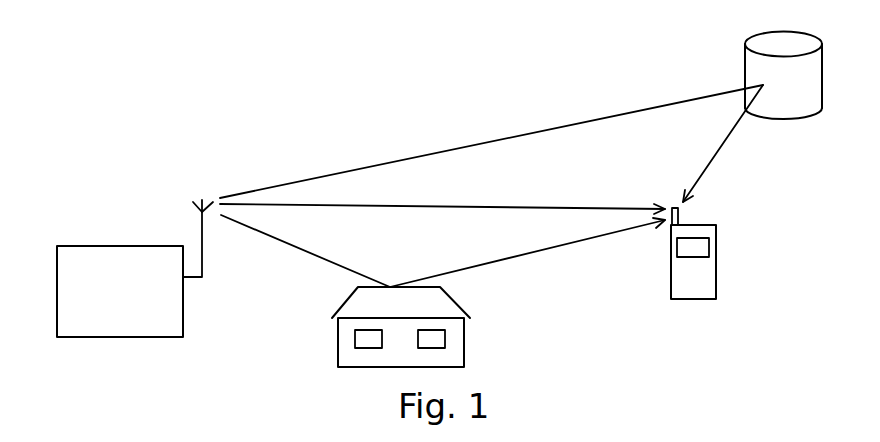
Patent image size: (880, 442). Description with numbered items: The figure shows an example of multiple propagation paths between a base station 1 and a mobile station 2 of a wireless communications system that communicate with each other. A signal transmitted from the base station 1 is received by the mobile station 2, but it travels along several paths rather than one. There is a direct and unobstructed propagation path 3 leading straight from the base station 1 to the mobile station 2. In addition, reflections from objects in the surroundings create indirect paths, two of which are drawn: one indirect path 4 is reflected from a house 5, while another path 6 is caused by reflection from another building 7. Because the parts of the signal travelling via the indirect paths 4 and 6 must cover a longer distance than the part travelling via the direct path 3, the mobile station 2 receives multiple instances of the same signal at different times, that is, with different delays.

The base station 1 is at (122, 246).
The mobile station 2 is at (716, 275).
The direct propagation path 3 is at (513, 203).
The indirect path 4 is at (520, 257).
The house 5 is at (464, 331).
The indirect path 6 is at (578, 122).
The building 7 is at (780, 118).